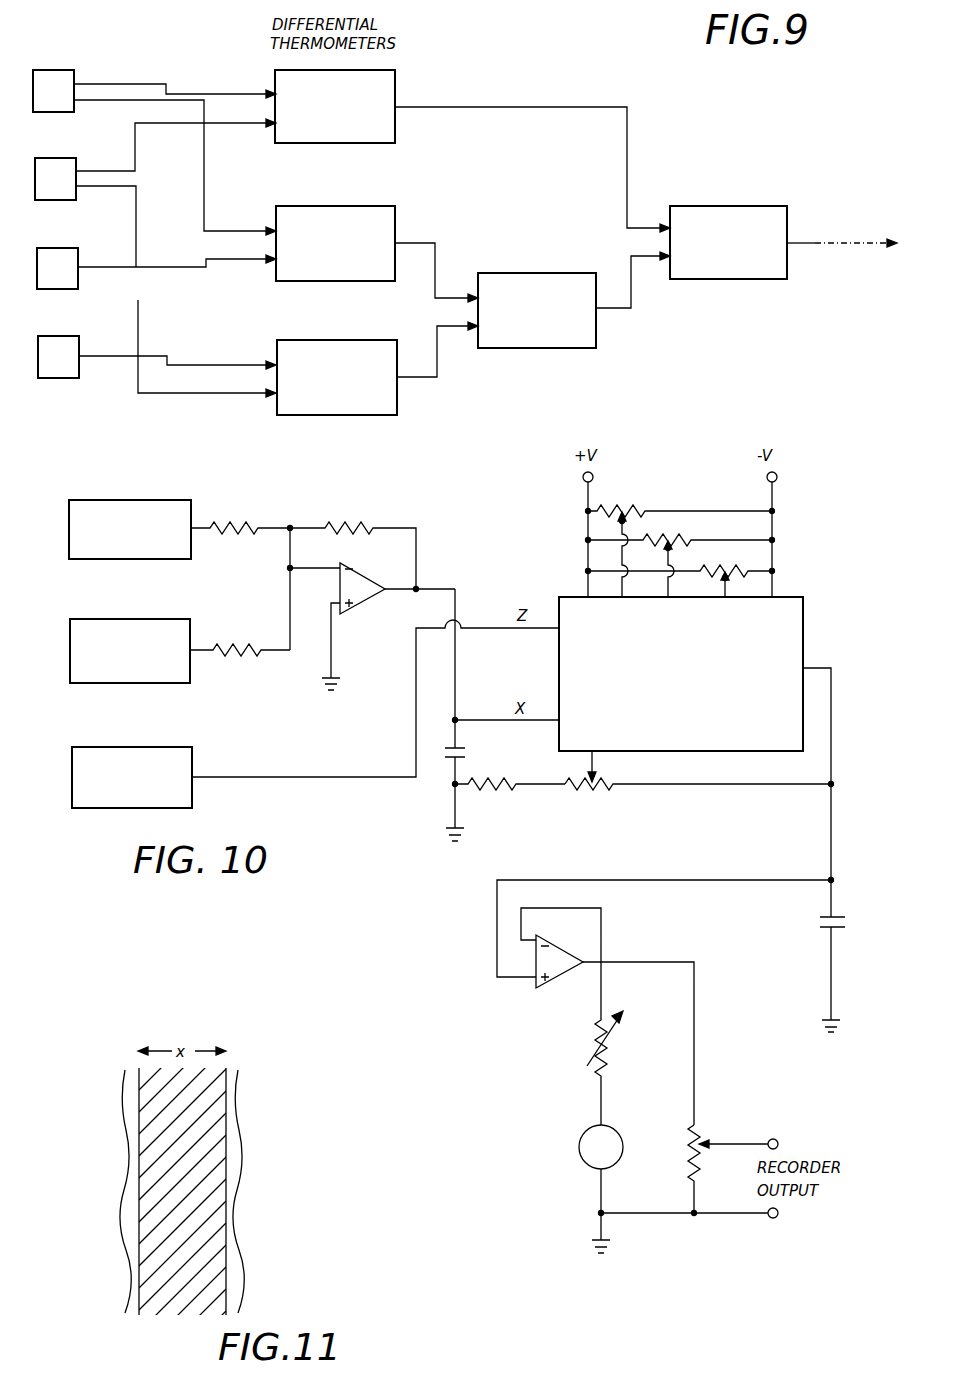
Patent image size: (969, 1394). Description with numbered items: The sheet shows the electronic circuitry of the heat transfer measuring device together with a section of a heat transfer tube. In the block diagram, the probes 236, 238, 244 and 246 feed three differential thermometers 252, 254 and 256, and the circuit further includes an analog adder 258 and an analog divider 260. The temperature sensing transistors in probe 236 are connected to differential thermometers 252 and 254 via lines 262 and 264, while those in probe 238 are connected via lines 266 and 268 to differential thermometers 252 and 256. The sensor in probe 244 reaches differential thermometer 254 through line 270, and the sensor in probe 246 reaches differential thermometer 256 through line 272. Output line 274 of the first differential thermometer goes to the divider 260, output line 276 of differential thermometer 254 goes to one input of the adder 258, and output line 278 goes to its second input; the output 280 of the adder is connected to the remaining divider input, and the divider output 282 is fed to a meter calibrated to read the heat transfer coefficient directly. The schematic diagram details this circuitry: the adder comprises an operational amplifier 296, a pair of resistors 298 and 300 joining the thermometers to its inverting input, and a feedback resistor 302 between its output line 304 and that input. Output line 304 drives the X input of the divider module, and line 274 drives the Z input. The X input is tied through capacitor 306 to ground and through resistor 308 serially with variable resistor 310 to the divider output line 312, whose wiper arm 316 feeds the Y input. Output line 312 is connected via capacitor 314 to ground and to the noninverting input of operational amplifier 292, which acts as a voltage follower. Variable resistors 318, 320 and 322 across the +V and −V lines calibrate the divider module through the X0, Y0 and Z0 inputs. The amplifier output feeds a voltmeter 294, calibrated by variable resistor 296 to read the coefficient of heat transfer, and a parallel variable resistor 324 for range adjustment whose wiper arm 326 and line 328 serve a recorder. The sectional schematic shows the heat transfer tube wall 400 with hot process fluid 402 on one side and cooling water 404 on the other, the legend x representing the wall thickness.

In FIG. 9, the probe 236 is at (75, 72).
In FIG. 9, the probe 238 is at (93, 145).
In FIG. 9, the probe 244 is at (97, 233).
In FIG. 9, the probe 246 is at (78, 378).
In FIG. 9, the differential thermometer 252 is at (396, 133).
In FIG. 10, the differential thermometer 252 is at (170, 747).
In FIG. 9, the differential thermometer 254 is at (316, 272).
In FIG. 10, the differential thermometer 254 is at (165, 619).
In FIG. 9, the differential thermometer 256 is at (318, 406).
In FIG. 10, the differential thermometer 256 is at (103, 500).
In FIG. 9, the adder 258 is at (545, 349).
In FIG. 10, the adder 258 is at (468, 543).
In FIG. 9, the divider 260 is at (728, 205).
In FIG. 10, the divider 260 is at (803, 632).
In FIG. 9, the line 262 is at (183, 95).
In FIG. 9, the line 264 is at (218, 229).
In FIG. 9, the line 266 is at (222, 123).
In FIG. 9, the line 268 is at (160, 395).
In FIG. 9, the line 270 is at (236, 259).
In FIG. 9, the line 272 is at (225, 337).
In FIG. 9, the output line 274 is at (538, 108).
In FIG. 10, the output line 274 is at (333, 778).
In FIG. 9, the output line 276 is at (435, 240).
In FIG. 9, the output line 278 is at (437, 358).
In FIG. 9, the output 280 is at (632, 296).
In FIG. 9, the divider output line 282 is at (815, 244).
In FIG. 10, the operational amplifier 292 is at (546, 991).
In FIG. 10, the voltmeter 294 is at (612, 1130).
In FIG. 10, the operational amplifier / variable resistor 296 is at (381, 560).
In FIG. 10, the resistor 298 is at (245, 520).
In FIG. 10, the resistor 300 is at (235, 650).
In FIG. 10, the feedback resistor 302 is at (345, 515).
In FIG. 10, the output line 304 is at (455, 587).
In FIG. 10, the capacitor 306 is at (466, 748).
In FIG. 10, the resistor 308 is at (505, 787).
In FIG. 10, the variable resistor 310 is at (600, 788).
In FIG. 10, the output line 312 is at (832, 738).
In FIG. 10, the capacitor 314 is at (836, 912).
In FIG. 10, the wiper arm 316 is at (595, 760).
In FIG. 10, the variable resistor 318 is at (626, 508).
In FIG. 10, the variable resistor 320 is at (699, 520).
In FIG. 10, the variable resistor 322 is at (748, 568).
In FIG. 10, the variable resistor 324 is at (697, 1135).
In FIG. 10, the wiper arm 326 is at (755, 1142).
In FIG. 10, the line 328 is at (745, 1215).
In FIG. 11, the heat transfer tube wall 400 is at (198, 1300).
In FIG. 11, the hot process fluid 402 is at (133, 1258).
In FIG. 11, the cooling water 404 is at (232, 1210).